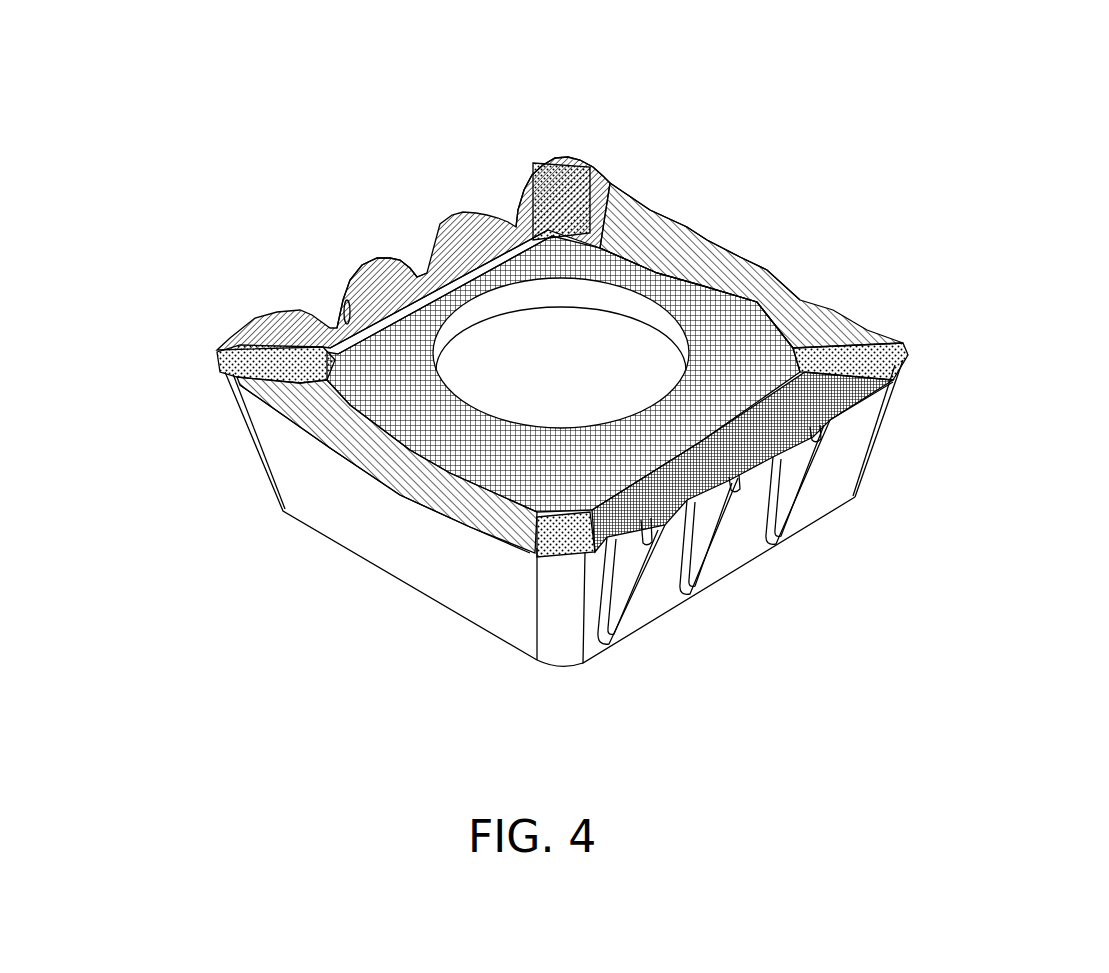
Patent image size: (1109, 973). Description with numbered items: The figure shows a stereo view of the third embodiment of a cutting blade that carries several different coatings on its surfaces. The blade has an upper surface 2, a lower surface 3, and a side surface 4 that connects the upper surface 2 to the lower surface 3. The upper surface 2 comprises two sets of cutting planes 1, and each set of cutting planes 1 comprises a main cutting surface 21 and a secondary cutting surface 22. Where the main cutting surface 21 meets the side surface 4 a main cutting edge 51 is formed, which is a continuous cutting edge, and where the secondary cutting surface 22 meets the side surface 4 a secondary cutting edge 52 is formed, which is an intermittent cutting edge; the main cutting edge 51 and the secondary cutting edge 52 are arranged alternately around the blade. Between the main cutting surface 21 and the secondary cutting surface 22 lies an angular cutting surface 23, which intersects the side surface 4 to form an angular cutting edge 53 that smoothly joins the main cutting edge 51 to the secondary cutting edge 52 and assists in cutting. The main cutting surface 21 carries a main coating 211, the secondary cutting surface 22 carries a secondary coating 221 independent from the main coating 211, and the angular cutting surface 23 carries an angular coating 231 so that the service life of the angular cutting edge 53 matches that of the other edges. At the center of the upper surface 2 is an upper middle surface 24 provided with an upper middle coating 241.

The cutting plane 1 is at (280, 22).
The upper surface 2 is at (597, 361).
The lower surface 3 is at (540, 547).
The side surface 4 is at (886, 462).
The main cutting surface 21 is at (596, 180).
The secondary cutting surface 22 is at (413, 215).
The angular cutting surface 23 is at (884, 323).
The upper middle surface 24 is at (431, 561).
The main cutting edge 51 is at (709, 200).
The secondary cutting edge 52 is at (313, 232).
The angular cutting edge 53 is at (606, 145).
The main coating 211 is at (346, 488).
The secondary coating 221 is at (768, 508).
The angular coating 231 is at (202, 416).
The upper middle coating 241 is at (752, 238).